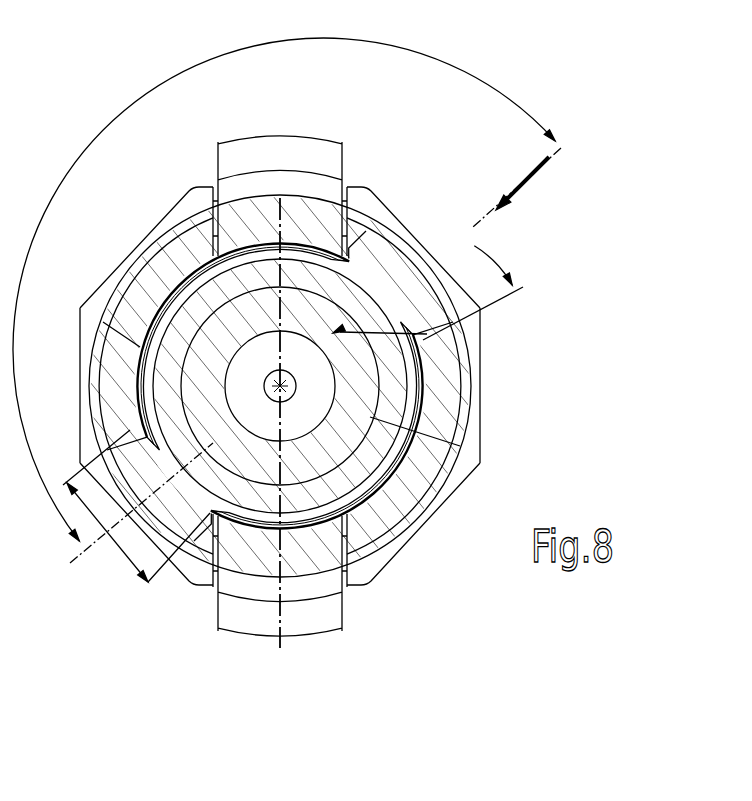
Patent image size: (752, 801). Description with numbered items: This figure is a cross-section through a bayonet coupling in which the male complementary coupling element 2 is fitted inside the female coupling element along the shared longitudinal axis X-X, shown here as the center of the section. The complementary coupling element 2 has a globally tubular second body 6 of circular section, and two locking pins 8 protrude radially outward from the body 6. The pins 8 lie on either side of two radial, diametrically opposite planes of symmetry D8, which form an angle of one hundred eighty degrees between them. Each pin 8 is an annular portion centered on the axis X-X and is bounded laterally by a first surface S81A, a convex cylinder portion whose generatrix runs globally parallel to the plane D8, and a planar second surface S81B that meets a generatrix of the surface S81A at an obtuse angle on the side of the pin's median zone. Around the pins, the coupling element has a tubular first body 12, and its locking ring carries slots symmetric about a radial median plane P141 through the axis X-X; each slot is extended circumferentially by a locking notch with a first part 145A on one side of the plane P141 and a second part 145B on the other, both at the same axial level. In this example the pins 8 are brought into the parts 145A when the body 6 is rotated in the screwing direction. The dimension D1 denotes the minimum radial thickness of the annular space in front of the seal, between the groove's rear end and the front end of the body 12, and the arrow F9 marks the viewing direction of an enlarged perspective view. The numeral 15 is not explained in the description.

The complementary coupling element 2 is at (207, 278).
The second body 6 is at (471, 485).
The locking pin 8 is at (376, 233).
The first body 12 is at (227, 327).
The pole piece 15 is at (262, 217).
The first part of the locking notch 145A is at (393, 202).
The second part of the locking notch 145B is at (154, 213).
The first surface S81A is at (119, 430).
The second surface S81B is at (139, 348).
The median plane P141 is at (281, 526).
The minimum thickness of the annular space D1 is at (416, 431).
The plane of symmetry D8 is at (561, 148).
The arrow F9 is at (522, 179).
The longitudinal axis X-X is at (296, 384).